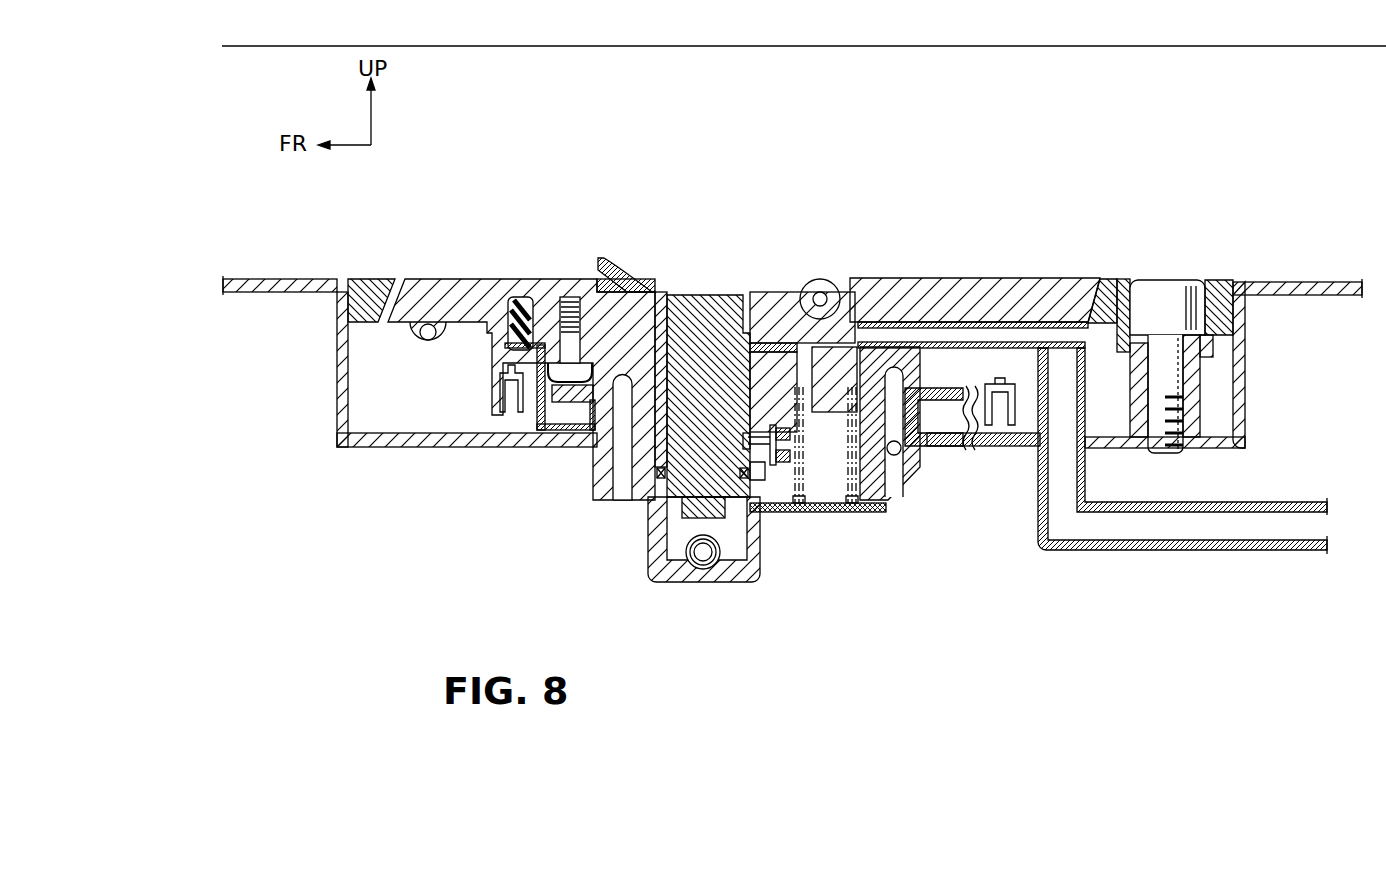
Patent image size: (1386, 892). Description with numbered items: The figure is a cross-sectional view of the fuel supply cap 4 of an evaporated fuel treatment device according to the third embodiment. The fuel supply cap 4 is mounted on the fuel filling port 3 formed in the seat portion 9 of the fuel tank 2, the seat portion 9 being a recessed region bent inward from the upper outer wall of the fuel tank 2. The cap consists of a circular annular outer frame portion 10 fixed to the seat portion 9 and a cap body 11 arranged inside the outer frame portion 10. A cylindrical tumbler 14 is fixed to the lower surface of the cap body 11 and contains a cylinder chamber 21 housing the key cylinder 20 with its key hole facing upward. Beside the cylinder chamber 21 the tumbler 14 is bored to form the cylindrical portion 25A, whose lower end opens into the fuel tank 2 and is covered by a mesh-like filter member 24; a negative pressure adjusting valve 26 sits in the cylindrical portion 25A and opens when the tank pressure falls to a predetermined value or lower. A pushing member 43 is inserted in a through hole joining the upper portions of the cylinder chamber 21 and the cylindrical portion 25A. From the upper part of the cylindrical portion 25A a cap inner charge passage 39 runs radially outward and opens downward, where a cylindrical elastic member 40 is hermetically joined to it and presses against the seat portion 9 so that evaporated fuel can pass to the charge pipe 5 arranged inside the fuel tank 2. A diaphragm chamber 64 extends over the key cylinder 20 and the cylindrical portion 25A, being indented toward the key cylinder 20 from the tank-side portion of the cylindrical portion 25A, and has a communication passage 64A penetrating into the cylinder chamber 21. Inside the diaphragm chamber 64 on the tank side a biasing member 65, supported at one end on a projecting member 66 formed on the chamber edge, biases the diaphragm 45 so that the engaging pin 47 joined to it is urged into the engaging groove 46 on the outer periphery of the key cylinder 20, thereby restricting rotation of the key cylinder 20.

The fuel tank 2 is at (270, 278).
The outer frame portion 10 is at (372, 282).
The cap body 11 is at (493, 290).
The fuel filling port 3 is at (617, 483).
The tumbler 14 is at (620, 497).
The cylinder chamber 21 is at (670, 366).
The key cylinder 20 is at (702, 387).
The engaging groove 46 is at (667, 493).
The engaging pin 47 is at (762, 472).
The negative pressure adjusting valve 26 is at (837, 343).
The pushing member 43 is at (776, 345).
The diaphragm chamber 64 is at (786, 436).
The diaphragm 45 is at (790, 456).
The communication passage 64A is at (745, 440).
The biasing member 65 is at (779, 465).
The projecting member 66 is at (820, 480).
The cylindrical portion 25A is at (845, 513).
The filter member 24 is at (873, 512).
The cap inner charge passage 39 is at (969, 330).
The cylindrical elastic member 40 is at (1085, 374).
The fuel supply cap 4 is at (998, 204).
The seat portion 9 is at (1114, 451).
The charge pipe 5 is at (1147, 550).